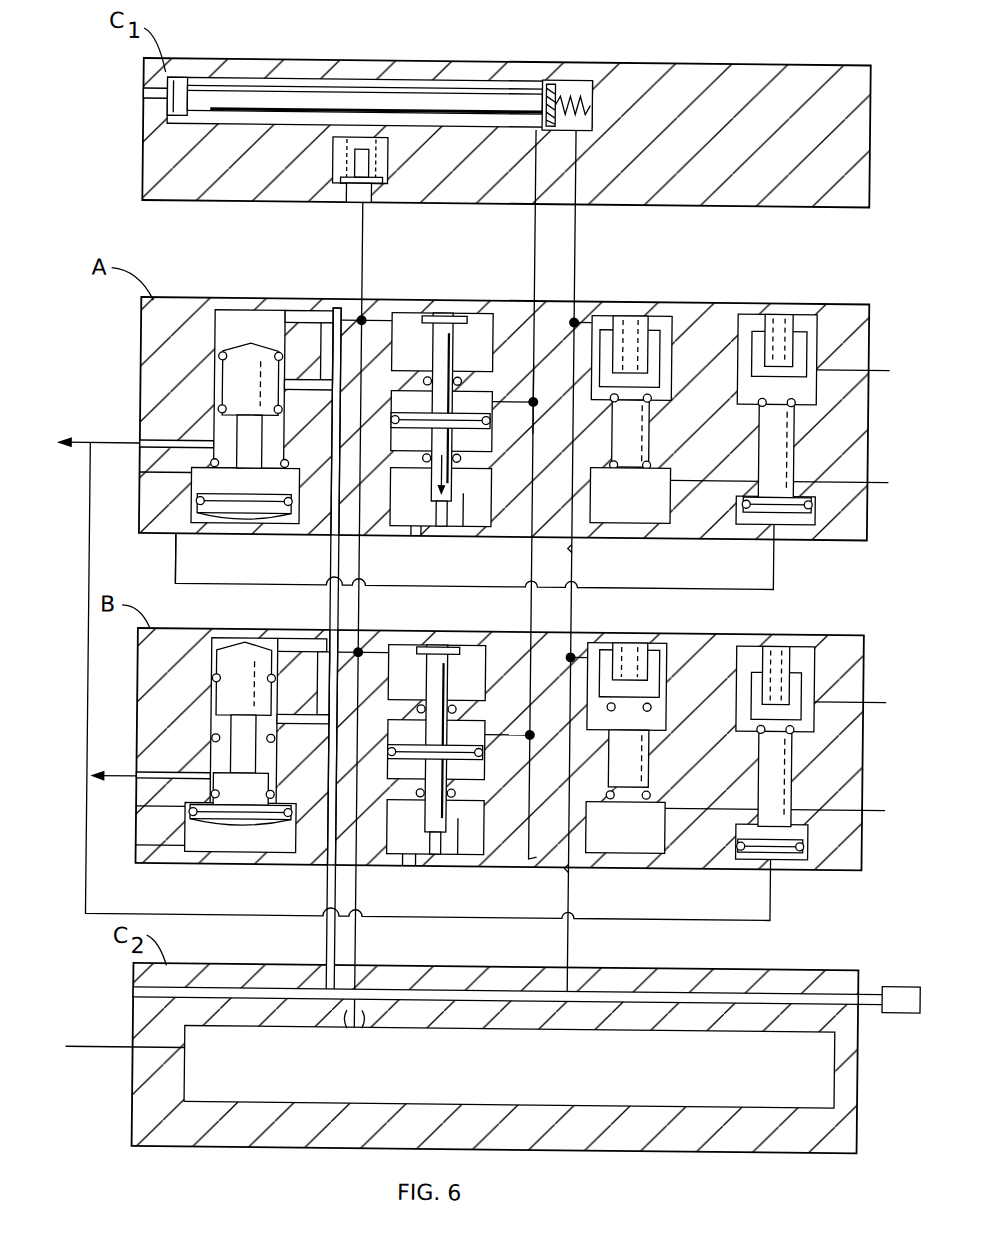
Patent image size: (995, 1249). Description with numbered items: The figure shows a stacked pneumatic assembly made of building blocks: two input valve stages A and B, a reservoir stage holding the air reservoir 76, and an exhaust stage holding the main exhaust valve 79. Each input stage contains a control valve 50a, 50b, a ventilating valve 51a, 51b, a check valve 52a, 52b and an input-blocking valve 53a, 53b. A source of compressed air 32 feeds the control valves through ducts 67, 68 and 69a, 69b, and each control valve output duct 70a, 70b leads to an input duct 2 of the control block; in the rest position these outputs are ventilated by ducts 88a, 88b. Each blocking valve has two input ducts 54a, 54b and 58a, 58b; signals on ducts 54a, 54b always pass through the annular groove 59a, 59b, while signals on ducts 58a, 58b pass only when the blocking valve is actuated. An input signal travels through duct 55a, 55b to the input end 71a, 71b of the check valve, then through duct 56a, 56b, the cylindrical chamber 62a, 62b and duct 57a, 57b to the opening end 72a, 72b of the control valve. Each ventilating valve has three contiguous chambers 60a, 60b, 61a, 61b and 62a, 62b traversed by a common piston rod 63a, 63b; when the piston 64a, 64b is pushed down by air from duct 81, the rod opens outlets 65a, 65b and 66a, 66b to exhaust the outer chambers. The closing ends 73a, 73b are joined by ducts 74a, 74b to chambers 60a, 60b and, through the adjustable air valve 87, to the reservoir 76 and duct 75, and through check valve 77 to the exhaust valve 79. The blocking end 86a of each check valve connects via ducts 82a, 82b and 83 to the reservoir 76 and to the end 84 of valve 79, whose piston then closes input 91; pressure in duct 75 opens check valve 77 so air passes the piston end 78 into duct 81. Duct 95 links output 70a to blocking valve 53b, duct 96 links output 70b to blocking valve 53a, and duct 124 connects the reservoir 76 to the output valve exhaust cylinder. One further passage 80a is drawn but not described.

The input duct 2 is at (80, 444).
The source of compressed air 32 is at (905, 982).
The control valve 50a is at (215, 312).
The control valve 50b is at (218, 640).
The ventilating valve 51a is at (394, 320).
The ventilating valve 51b is at (392, 645).
The check valve 52a is at (615, 312).
The check valve 52b is at (632, 642).
The input-blocking valve 53a is at (748, 315).
The input-blocking valve 53b is at (795, 648).
The input duct 54a is at (855, 475).
The input duct 54b is at (855, 806).
The duct 55a is at (745, 505).
The duct 55b is at (745, 845).
The duct 56a is at (598, 548).
The duct 56b is at (570, 870).
The duct 57a is at (395, 525).
The duct 57b is at (345, 860).
The input duct 58a is at (858, 363).
The input duct 58b is at (858, 704).
The annular slot 59a is at (793, 430).
The annular groove 59b is at (795, 760).
The cylindrical chamber 60a is at (475, 310).
The cylindrical chamber 60b is at (470, 645).
The cylindrical chamber 61a is at (485, 390).
The cylindrical chamber 61b is at (480, 690).
The cylindrical chamber 62a is at (445, 530).
The cylindrical chamber 62b is at (478, 838).
The piston rod 63a is at (462, 520).
The piston rod 63b is at (460, 835).
The piston 64a is at (470, 422).
The piston 64b is at (468, 750).
The outlet 65a is at (455, 315).
The outlet 65b is at (452, 646).
The outlet 66a is at (420, 540).
The outlet 66b is at (420, 858).
The duct 67 is at (650, 987).
The duct 68 is at (330, 552).
The duct 69a is at (308, 376).
The duct 69b is at (308, 712).
The duct 70a is at (145, 440).
The duct 70b is at (148, 772).
The input end 71a is at (660, 505).
The input end 71b is at (612, 830).
The opening end 72a is at (174, 574).
The opening end 72b is at (160, 860).
The closing end 73a is at (272, 345).
The closing end 73b is at (268, 648).
The duct 74a is at (334, 308).
The duct 74b is at (340, 658).
The duct 75 is at (362, 218).
The air reservoir 76 is at (536, 1087).
The check valve 77 is at (336, 180).
The piston end 78 is at (440, 85).
The main exhaust valve 79 is at (362, 77).
The passage 80a is at (531, 395).
The duct 81 is at (531, 218).
The duct 82a is at (576, 318).
The duct 82b is at (574, 652).
The duct 83 is at (572, 218).
The end 84 is at (580, 82).
The blocking end 86a is at (640, 330).
The adjustable air valve 87 is at (366, 1025).
The duct 88a is at (140, 520).
The duct 88b is at (138, 805).
The input 91 is at (173, 78).
The duct 95 is at (86, 918).
The duct 96 is at (290, 583).
The duct 124 is at (135, 1047).